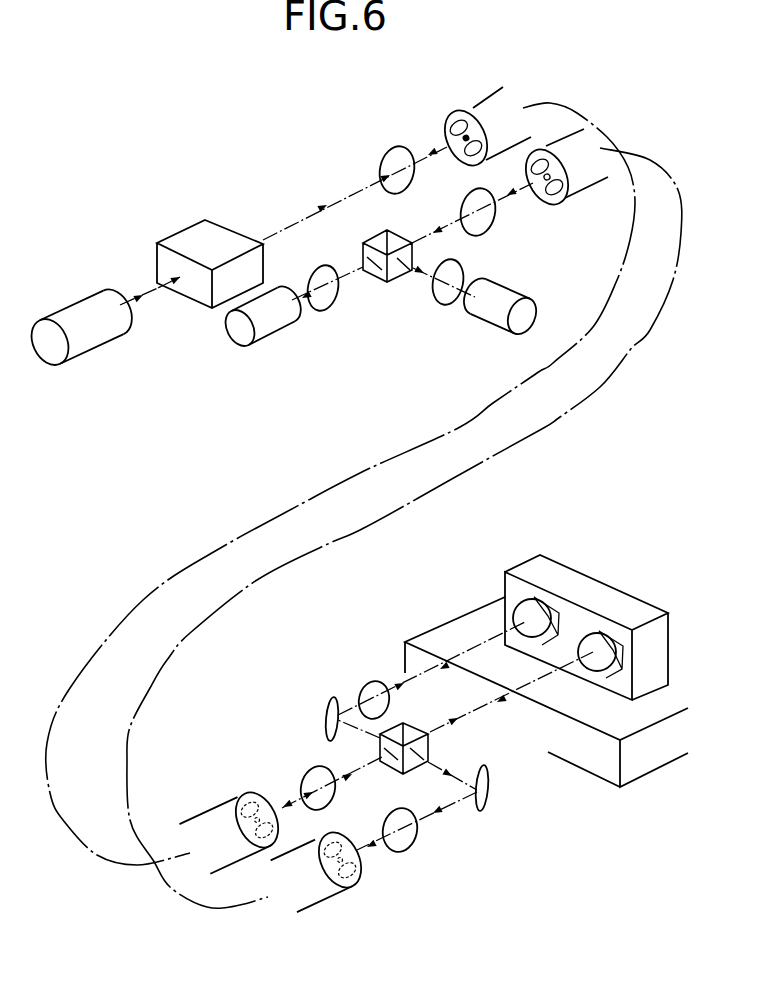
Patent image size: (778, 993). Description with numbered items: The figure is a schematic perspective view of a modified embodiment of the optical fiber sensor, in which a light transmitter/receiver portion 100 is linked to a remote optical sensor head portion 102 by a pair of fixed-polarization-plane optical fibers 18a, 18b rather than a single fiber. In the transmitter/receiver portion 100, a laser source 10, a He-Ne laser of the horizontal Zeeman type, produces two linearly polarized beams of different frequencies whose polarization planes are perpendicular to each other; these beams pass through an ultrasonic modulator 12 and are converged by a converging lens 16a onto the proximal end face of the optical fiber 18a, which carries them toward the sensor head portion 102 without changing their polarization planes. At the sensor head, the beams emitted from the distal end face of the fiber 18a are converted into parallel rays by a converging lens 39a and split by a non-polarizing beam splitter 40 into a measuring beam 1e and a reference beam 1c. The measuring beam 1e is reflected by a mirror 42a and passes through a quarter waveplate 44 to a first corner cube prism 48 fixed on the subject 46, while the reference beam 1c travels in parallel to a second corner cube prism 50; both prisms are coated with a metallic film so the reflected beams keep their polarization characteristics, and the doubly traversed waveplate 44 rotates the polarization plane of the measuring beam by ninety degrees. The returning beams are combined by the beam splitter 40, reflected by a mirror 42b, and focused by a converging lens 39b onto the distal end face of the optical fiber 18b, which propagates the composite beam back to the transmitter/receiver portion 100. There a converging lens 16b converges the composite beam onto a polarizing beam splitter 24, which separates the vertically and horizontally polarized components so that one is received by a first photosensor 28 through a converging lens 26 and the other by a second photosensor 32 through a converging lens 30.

The light transmitter/receiver portion 100 is at (285, 157).
The optical sensor head portion 102 is at (476, 875).
The laser source 10 is at (75, 313).
The ultrasonic modulator 12 is at (162, 262).
The converging lens 16a is at (388, 153).
The converging lens 16b is at (495, 222).
The fixed-polarization-plane optical fiber 18a is at (478, 108).
The fixed-polarization-plane optical fiber 18b is at (580, 182).
The polarizing beam splitter 24 is at (372, 258).
The converging lens 26 is at (338, 303).
The first photosensor 28 is at (273, 328).
The converging lens 30 is at (440, 288).
The second photosensor 32 is at (492, 315).
The converging lens 39a is at (307, 778).
The converging lens 39b is at (412, 848).
The non-polarizing beam splitter 40 is at (393, 762).
The mirror 42a is at (326, 722).
The mirror 42b is at (488, 798).
The 1/4 waveplate 44 is at (365, 688).
The subject 46 is at (563, 582).
The first corner cube prism 48 is at (522, 617).
The second corner cube prism 50 is at (597, 650).
The reference beam 1c is at (450, 727).
The measuring beam 1e is at (393, 693).